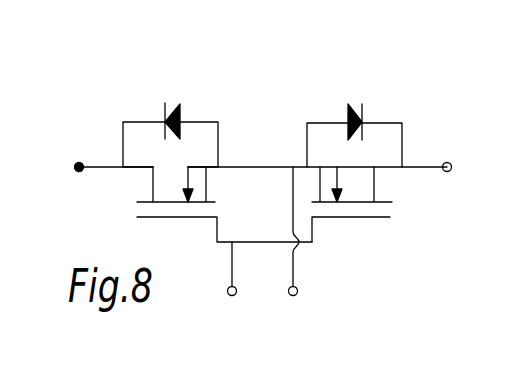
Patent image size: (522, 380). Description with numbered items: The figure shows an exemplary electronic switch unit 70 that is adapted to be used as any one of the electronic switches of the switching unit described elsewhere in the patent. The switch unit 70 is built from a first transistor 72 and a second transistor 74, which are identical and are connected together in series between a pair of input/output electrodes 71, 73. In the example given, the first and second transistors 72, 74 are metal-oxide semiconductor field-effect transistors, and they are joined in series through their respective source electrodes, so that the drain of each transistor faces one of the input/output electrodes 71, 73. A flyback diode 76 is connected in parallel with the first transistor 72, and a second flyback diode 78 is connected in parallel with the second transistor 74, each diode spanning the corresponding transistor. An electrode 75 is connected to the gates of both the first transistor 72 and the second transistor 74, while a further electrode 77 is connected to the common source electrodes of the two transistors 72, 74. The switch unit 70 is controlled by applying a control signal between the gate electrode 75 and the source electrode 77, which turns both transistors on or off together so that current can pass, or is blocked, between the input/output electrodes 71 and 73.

The electronic switch unit 70 is at (102, 107).
The input/output electrode 71 is at (79, 162).
The first transistor 72 is at (222, 215).
The input/output electrode 73 is at (447, 162).
The second transistor 74 is at (395, 208).
The electrode 75 is at (227, 291).
The flyback diode 76 is at (183, 85).
The electrode 77 is at (298, 292).
The flyback diode 78 is at (358, 98).